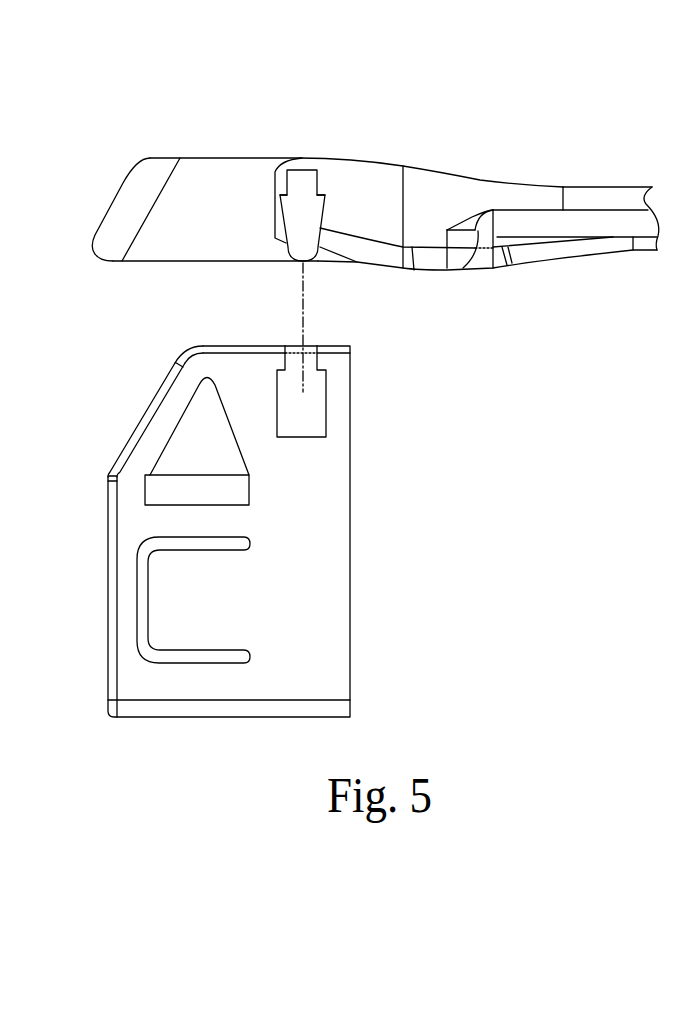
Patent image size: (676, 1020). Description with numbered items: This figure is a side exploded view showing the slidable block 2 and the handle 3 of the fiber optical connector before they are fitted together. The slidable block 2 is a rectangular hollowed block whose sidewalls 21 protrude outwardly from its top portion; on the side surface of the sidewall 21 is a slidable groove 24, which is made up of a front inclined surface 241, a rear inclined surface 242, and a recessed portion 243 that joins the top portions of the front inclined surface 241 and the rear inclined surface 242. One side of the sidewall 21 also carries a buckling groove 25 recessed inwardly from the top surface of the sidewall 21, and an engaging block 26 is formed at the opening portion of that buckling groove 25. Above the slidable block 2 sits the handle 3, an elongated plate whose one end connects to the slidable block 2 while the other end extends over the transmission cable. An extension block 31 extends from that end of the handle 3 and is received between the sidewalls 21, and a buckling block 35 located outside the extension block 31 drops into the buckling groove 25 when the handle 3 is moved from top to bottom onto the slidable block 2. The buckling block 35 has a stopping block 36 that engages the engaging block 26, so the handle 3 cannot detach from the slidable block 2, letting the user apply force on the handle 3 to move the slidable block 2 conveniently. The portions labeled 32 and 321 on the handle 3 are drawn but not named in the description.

The slidable block 2 is at (231, 507).
The sidewall 21 is at (337, 455).
The slidable groove 24 is at (140, 401).
The front inclined surface 241 is at (170, 435).
The rear inclined surface 242 is at (233, 418).
The recessed portion 243 is at (205, 376).
The buckling groove 25 is at (327, 403).
The engaging block 26 is at (320, 363).
The handle 3 is at (364, 162).
The extension block 31 is at (328, 157).
The latch arm 32 is at (194, 173).
The inclined guide end 321 is at (122, 192).
The buckling block 35 is at (333, 174).
The stopping block 36 is at (325, 195).